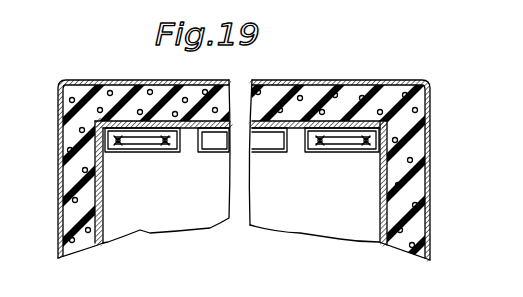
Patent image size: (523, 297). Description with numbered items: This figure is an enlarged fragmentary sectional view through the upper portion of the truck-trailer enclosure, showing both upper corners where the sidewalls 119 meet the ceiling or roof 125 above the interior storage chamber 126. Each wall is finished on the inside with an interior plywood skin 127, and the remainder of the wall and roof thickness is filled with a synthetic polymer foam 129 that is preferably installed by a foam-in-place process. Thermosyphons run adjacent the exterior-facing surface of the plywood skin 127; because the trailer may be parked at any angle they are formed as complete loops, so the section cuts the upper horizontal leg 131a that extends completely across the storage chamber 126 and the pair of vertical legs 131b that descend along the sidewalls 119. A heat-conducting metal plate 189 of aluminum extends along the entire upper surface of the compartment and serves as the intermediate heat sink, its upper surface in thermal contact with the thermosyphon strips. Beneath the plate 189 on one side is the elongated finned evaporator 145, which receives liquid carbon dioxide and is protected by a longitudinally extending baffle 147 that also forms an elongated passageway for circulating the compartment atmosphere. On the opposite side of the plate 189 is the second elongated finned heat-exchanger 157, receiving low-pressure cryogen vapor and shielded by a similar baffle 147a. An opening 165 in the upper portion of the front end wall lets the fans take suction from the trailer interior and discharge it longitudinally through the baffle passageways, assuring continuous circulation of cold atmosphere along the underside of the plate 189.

The sidewall 119 is at (58, 160).
The ceiling or roof 125 is at (307, 96).
The interior storage chamber 126 is at (310, 218).
The interior plywood skin 127 is at (113, 228).
The synthetic polymer foam 129 is at (406, 246).
The upper horizontal leg 131a is at (118, 125).
The vertical legs 131b is at (105, 207).
The elongated finned evaporator 145 is at (113, 118).
The baffle 147 is at (131, 155).
The baffle 147a is at (323, 150).
The second elongated finned heat-exchanger 157 is at (371, 148).
The opening 165 is at (268, 150).
The heat-conducting metal plate 189 is at (187, 130).